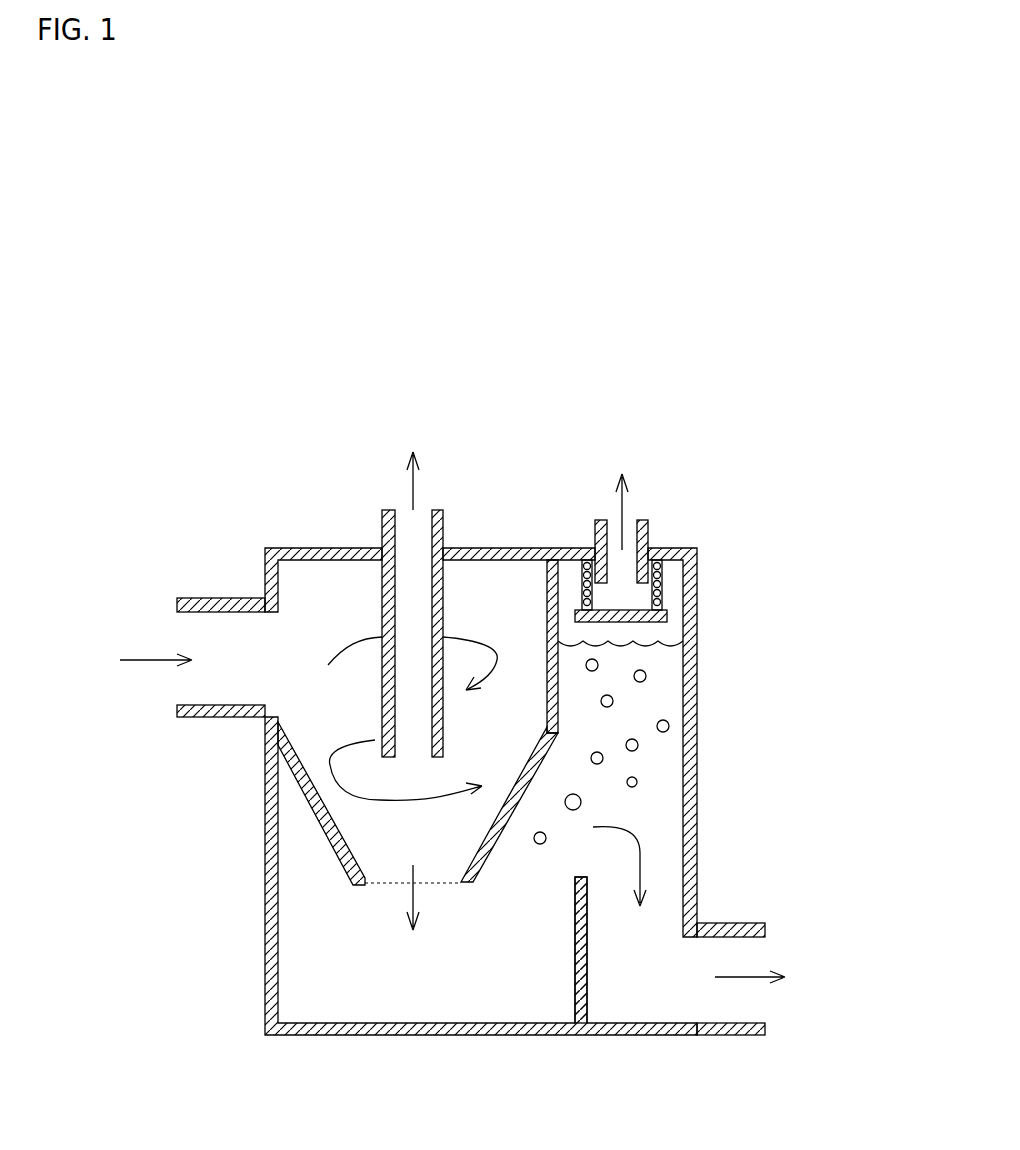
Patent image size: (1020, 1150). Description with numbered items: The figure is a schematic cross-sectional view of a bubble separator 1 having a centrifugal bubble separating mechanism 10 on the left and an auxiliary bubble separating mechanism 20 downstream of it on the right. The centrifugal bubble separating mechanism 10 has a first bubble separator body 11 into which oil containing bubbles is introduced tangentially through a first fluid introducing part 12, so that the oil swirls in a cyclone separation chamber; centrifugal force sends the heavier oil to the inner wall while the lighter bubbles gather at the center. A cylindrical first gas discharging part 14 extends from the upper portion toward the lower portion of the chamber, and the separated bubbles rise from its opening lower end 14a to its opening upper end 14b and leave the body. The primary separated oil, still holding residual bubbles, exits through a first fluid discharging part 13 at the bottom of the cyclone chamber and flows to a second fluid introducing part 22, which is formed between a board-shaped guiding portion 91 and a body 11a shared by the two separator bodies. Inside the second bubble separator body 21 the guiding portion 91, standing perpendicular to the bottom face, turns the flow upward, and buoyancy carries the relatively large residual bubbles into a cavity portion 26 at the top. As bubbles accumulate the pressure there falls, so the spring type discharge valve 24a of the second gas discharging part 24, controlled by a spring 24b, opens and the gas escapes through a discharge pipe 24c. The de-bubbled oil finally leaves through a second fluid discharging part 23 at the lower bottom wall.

The bubble separator 1 is at (215, 378).
The centrifugal bubble separating mechanism 10 is at (393, 441).
The first bubble separator body 11 is at (352, 548).
The body 11a is at (560, 733).
The first fluid introducing part 12 is at (217, 687).
The first fluid discharging part 13 is at (390, 882).
The first gas discharging part 14 is at (442, 527).
The opening lower end 14a is at (390, 758).
The opening upper end 14b is at (441, 510).
The auxiliary bubble separating mechanism 20 is at (605, 448).
The second bubble separator body 21 is at (697, 673).
The second fluid introducing part 22 is at (525, 900).
The second fluid discharging part 23 is at (752, 955).
The second gas discharging part 24 is at (655, 541).
The spring type discharge valve 24a is at (667, 622).
The spring 24b is at (662, 593).
The discharge pipe 24c is at (650, 545).
The cavity portion 26 is at (677, 582).
The guiding portion 91 is at (587, 985).